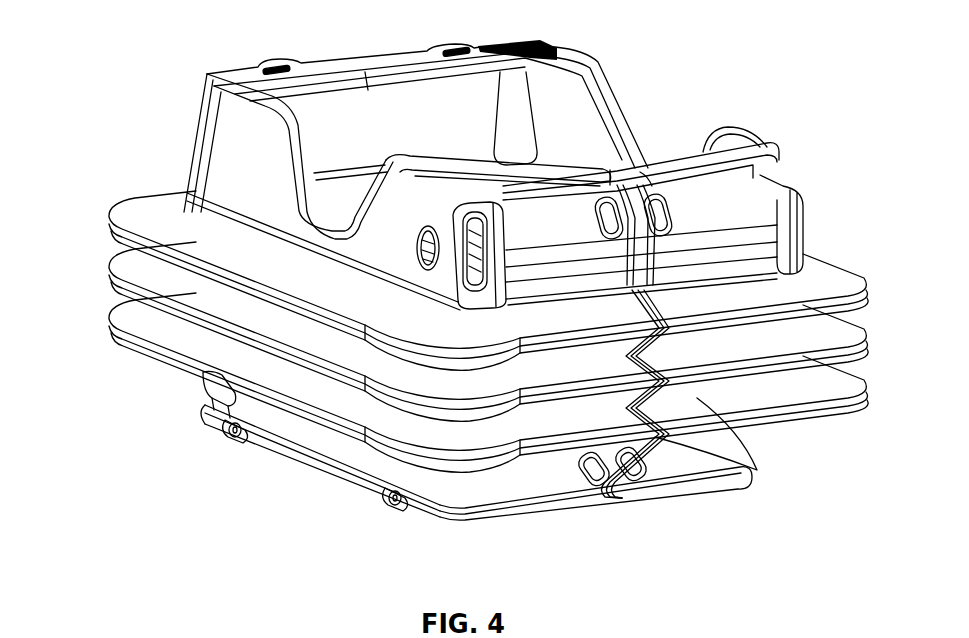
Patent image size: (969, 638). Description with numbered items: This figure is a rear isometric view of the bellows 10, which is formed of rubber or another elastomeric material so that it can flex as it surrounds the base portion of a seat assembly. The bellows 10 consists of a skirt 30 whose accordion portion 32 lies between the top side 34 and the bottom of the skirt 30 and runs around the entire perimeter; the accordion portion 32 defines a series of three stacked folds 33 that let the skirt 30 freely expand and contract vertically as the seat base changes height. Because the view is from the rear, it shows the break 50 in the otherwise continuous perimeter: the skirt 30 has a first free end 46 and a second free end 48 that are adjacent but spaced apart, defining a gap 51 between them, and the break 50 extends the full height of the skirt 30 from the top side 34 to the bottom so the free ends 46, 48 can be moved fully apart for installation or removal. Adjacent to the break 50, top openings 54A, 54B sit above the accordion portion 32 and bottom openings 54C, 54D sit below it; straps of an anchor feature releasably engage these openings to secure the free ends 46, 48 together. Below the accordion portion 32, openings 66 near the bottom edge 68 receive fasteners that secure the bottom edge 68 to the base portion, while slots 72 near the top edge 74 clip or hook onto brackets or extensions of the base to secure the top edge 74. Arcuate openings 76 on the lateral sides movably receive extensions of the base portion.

The bellows 10 is at (205, 36).
The skirt 30 is at (788, 178).
The accordion portion 32 is at (89, 197).
The folds 33 is at (140, 345).
The top side 34 is at (741, 153).
The first free end 46 is at (665, 440).
The second free end 48 is at (752, 443).
The break 50 is at (747, 482).
The gap 51 is at (622, 169).
The top opening 54A is at (601, 197).
The top opening 54B is at (651, 193).
The bottom opening 54C is at (629, 487).
The bottom opening 54D is at (631, 464).
The openings 66 is at (230, 440).
The bottom edge 68 is at (328, 478).
The slots 72 is at (286, 66).
The top edge 74 is at (587, 58).
The arcuate openings 76 is at (466, 210).